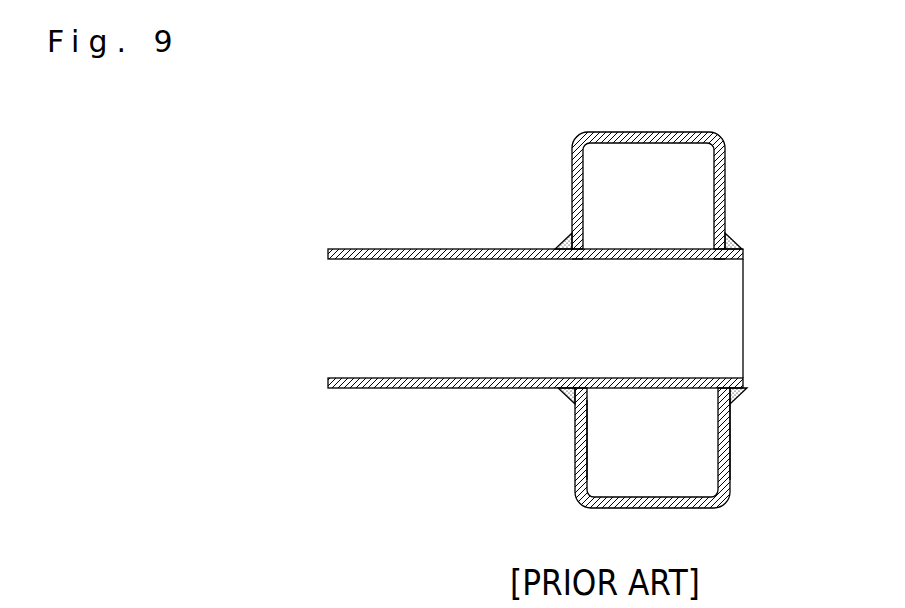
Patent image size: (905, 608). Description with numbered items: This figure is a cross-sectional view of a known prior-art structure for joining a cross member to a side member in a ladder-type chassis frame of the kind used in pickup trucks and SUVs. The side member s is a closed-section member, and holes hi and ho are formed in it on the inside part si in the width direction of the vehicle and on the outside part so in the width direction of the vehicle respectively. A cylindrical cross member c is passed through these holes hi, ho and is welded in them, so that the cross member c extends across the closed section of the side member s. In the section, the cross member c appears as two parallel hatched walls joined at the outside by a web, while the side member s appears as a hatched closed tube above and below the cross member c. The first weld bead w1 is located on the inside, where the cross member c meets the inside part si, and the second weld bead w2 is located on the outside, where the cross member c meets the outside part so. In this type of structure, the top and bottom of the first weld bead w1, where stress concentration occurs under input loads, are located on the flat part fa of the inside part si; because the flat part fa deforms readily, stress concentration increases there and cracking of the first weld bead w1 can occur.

The side member s is at (646, 124).
The cross member c is at (408, 244).
The first weld bead w1 is at (567, 242).
The second weld bead w2 is at (735, 234).
The hole hi is at (580, 260).
The hole ho is at (723, 260).
The flat part fa is at (575, 423).
The inside part si is at (575, 465).
The outside part so is at (730, 458).